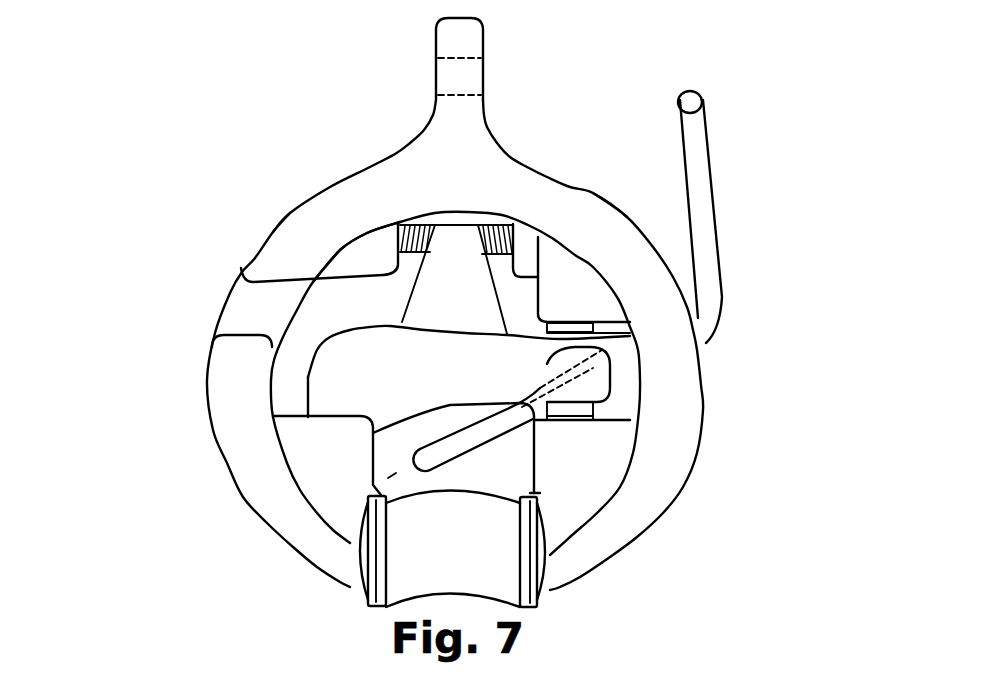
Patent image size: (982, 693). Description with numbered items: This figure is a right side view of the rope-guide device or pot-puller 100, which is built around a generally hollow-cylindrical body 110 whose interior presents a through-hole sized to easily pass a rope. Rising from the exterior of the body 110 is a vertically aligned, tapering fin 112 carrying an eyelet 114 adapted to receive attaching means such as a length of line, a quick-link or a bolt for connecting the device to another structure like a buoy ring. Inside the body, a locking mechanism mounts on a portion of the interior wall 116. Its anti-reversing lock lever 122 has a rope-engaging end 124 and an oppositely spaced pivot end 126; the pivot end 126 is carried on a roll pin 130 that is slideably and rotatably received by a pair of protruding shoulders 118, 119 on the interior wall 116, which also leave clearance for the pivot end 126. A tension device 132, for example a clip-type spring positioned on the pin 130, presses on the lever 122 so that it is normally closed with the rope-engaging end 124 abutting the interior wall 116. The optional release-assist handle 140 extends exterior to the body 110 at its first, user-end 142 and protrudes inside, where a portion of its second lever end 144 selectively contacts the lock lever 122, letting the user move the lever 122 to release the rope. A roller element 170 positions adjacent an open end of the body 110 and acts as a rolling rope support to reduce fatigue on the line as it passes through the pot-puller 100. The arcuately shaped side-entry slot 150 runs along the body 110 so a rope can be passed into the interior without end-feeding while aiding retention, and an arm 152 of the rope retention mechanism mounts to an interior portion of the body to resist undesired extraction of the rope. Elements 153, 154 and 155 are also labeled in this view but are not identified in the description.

The pot-puller 100 is at (385, 120).
The body 110 is at (450, 120).
The fin 112 is at (393, 62).
The eyelet 114 is at (485, 63).
The interior wall 116 is at (280, 340).
The protruding shoulder 118 is at (353, 258).
The protruding shoulder 119 is at (527, 247).
The anti-reversing lock lever 122 is at (540, 506).
The rope-engaging end 124 is at (450, 492).
The pivot end 126 is at (453, 227).
The roll pin 130 is at (407, 226).
The tension device 132 is at (405, 228).
The release-assist handle 140 is at (760, 177).
The user-end 142 is at (703, 80).
The second lever end 144 is at (404, 471).
The arcuately shaped slot 150 is at (450, 371).
The arm 152 is at (310, 377).
The lower block 153 is at (323, 448).
The ring segment 154 is at (578, 290).
The ring segment 155 is at (588, 455).
The roller element 170 is at (547, 540).